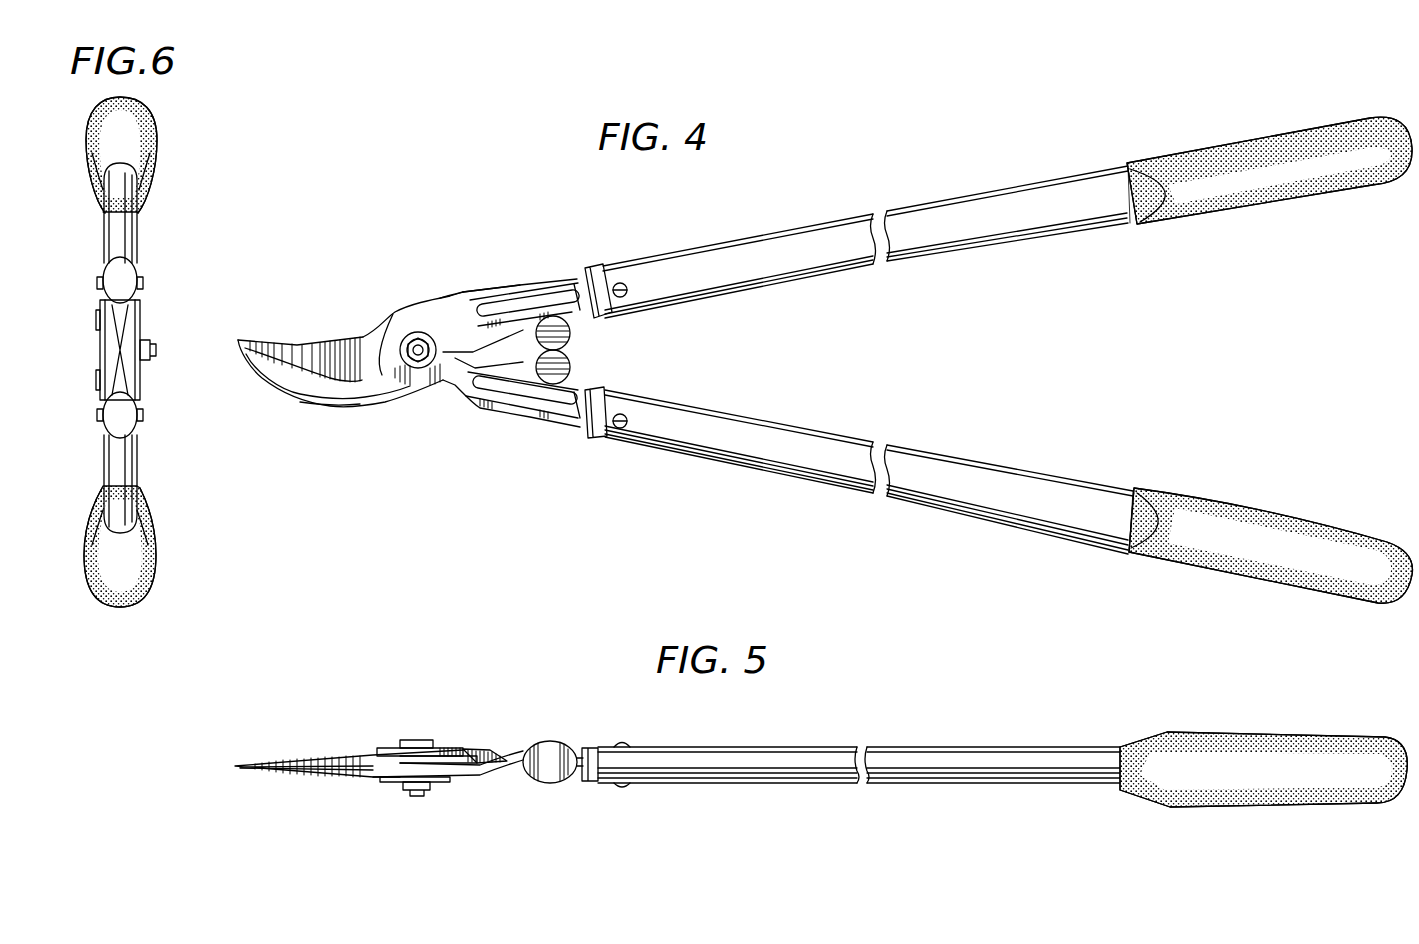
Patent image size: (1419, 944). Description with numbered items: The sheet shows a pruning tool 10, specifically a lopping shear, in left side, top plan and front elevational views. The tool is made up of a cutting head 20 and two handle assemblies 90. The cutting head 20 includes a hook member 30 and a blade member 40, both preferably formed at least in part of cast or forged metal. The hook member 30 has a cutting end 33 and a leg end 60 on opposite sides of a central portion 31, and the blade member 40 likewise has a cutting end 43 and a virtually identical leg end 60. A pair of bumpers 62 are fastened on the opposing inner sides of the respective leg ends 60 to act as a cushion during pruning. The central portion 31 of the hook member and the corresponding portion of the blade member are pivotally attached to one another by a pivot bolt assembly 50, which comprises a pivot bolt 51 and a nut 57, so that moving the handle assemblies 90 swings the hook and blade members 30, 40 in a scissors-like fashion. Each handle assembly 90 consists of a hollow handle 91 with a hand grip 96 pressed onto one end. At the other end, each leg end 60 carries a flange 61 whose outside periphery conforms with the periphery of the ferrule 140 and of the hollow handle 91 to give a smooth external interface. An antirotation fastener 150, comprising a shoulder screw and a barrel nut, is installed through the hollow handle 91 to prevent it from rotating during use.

In FIG. 4, the pruning tool 10 is at (708, 240).
In FIG. 5, the pruning tool 10 is at (722, 700).
In FIG. 6, the pruning tool 10 is at (172, 207).
In FIG. 4, the cutting head 20 is at (417, 292).
In FIG. 4, the hook member 30 is at (421, 404).
In FIG. 5, the hook member 30 is at (484, 775).
In FIG. 4, the central portion 31 is at (445, 318).
In FIG. 4, the cutting end 33 is at (348, 404).
In FIG. 5, the cutting end 33 is at (307, 775).
In FIG. 4, the blade member 40 is at (388, 318).
In FIG. 5, the blade member 40 is at (451, 742).
In FIG. 4, the cutting end 43 is at (327, 357).
In FIG. 5, the cutting end 43 is at (307, 758).
In FIG. 4, the pivot bolt assembly 50 is at (412, 363).
In FIG. 5, the pivot bolt assembly 50 is at (421, 801).
In FIG. 6, the pivot bolt assembly 50 is at (156, 348).
In FIG. 5, the pivot bolt 51 is at (410, 739).
In FIG. 5, the nut 57 is at (404, 790).
In FIG. 4, the leg end 60 is at (537, 292).
In FIG. 5, the leg end 60 is at (480, 755).
In FIG. 4, the flange 61 is at (583, 275).
In FIG. 4, the bumper 62 is at (575, 345).
In FIG. 4, the handle assembly 90 is at (968, 186).
In FIG. 4, the hollow handle 91 is at (822, 238).
In FIG. 5, the hollow handle 91 is at (932, 745).
In FIG. 6, the hollow handle 91 is at (120, 247).
In FIG. 4, the hand grip 96 is at (1205, 160).
In FIG. 5, the hand grip 96 is at (1238, 733).
In FIG. 6, the hand grip 96 is at (158, 157).
In FIG. 4, the ferrule 140 is at (589, 276).
In FIG. 5, the ferrule 140 is at (590, 764).
In FIG. 4, the antirotation fastener 150 is at (636, 292).
In FIG. 5, the antirotation fastener 150 is at (622, 742).
In FIG. 6, the antirotation fastener 150 is at (143, 275).